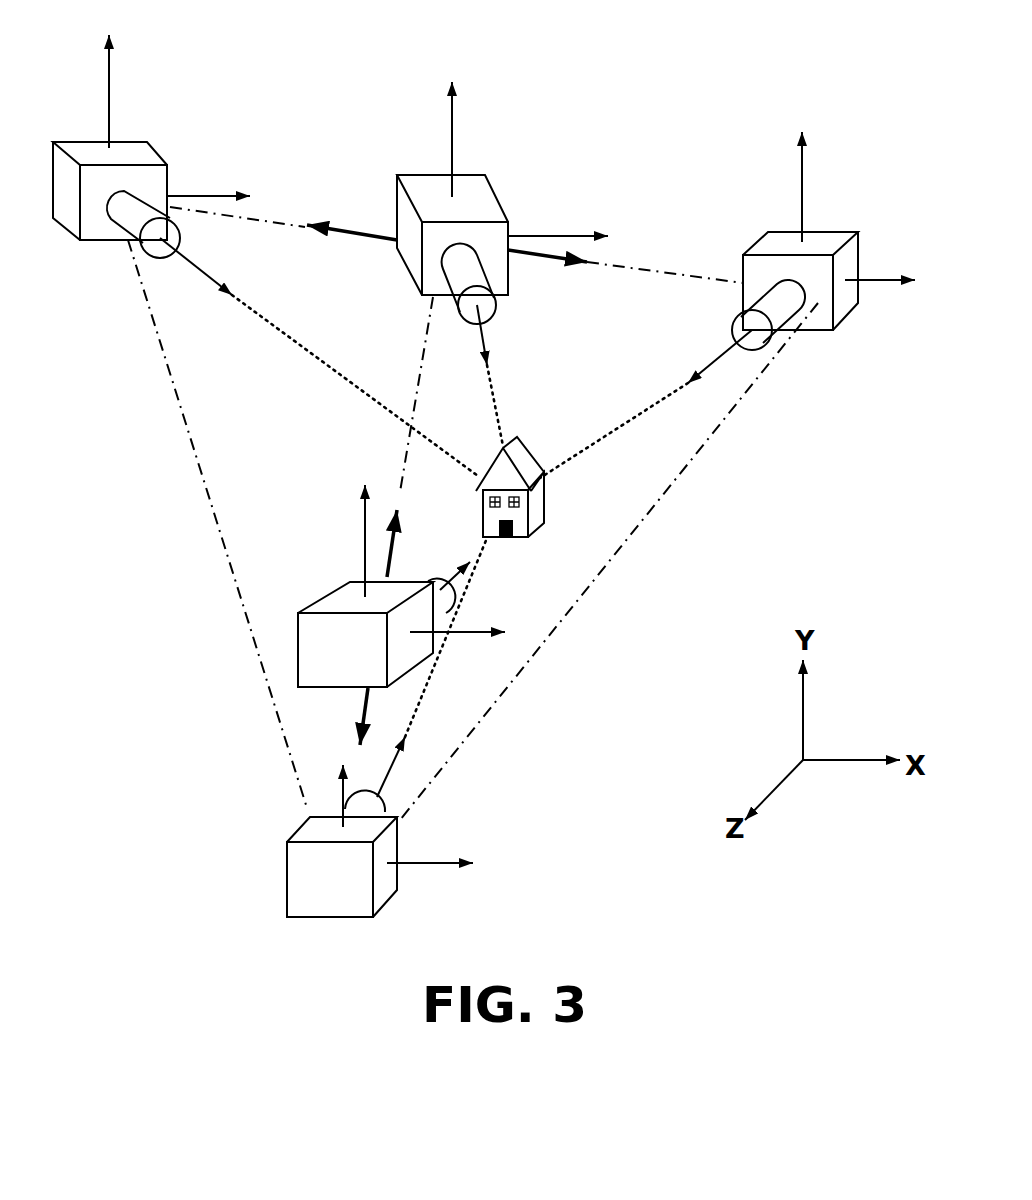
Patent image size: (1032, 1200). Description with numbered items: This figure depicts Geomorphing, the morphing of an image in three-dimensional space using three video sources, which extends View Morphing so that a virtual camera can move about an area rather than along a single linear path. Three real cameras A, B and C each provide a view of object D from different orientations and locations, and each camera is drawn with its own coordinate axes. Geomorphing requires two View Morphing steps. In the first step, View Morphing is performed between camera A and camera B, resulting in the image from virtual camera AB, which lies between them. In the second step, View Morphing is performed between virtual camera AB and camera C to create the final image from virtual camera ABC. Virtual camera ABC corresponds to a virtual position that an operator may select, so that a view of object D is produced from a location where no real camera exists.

The camera A is at (137, 157).
The virtual camera AB is at (433, 193).
The camera B is at (778, 242).
The virtual camera ABC is at (352, 597).
The camera C is at (308, 835).
The object D is at (528, 462).